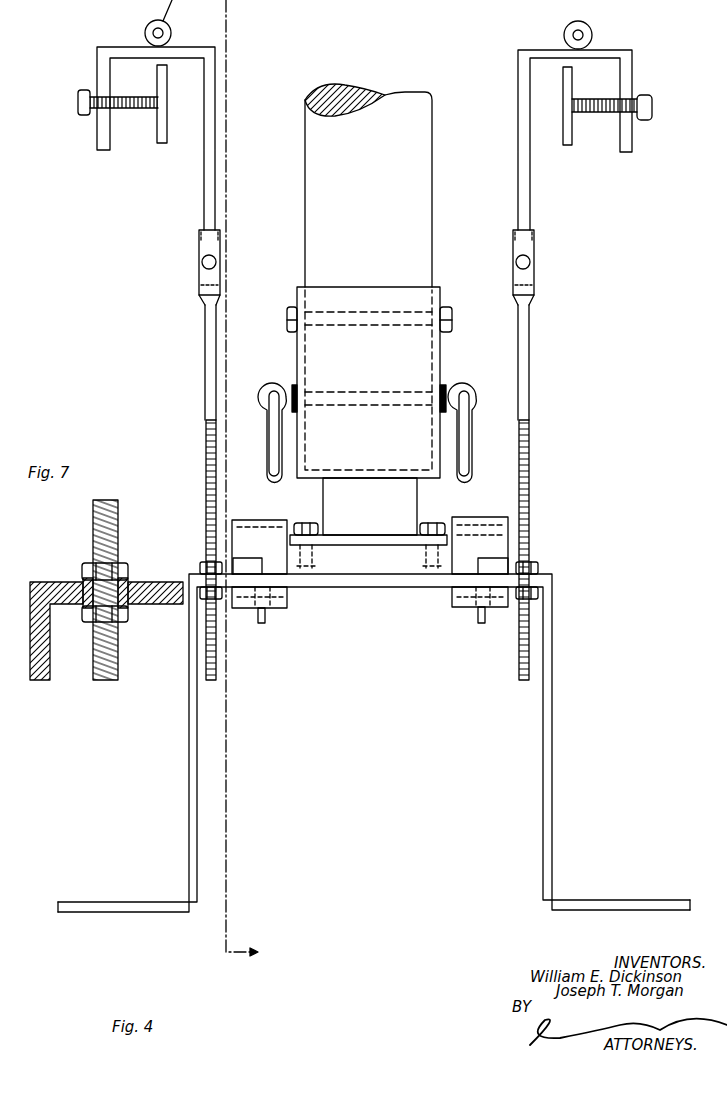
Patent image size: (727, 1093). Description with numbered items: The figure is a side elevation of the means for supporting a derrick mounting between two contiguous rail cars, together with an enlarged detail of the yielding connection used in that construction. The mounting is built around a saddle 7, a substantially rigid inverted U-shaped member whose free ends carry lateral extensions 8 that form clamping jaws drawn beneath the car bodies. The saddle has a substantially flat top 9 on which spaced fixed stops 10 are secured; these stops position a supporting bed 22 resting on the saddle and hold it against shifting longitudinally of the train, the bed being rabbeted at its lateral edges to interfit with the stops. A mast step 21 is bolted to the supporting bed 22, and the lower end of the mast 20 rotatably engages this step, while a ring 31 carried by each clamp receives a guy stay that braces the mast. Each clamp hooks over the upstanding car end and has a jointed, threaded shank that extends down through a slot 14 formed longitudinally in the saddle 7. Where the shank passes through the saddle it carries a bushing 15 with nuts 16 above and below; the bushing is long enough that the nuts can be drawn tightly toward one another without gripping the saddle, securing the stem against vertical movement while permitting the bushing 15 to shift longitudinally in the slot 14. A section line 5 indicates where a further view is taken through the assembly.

In FIG. 4, the section line 5 is at (248, 483).
In FIG. 4, the saddle 7 is at (198, 733).
In FIG. 4, the lateral extension 8 is at (112, 908).
In FIG. 4, the flat top 9 is at (370, 588).
In FIG. 4, the stop 10 is at (232, 562).
In FIG. 7, the slot 14 is at (150, 605).
In FIG. 7, the bushing 15 is at (82, 578).
In FIG. 7, the nut 16 is at (88, 565).
In FIG. 4, the mast 20 is at (420, 192).
In FIG. 4, the mast step 21 is at (370, 506).
In FIG. 4, the supporting bed 22 is at (368, 576).
In FIG. 4, the ring 31 is at (564, 32).